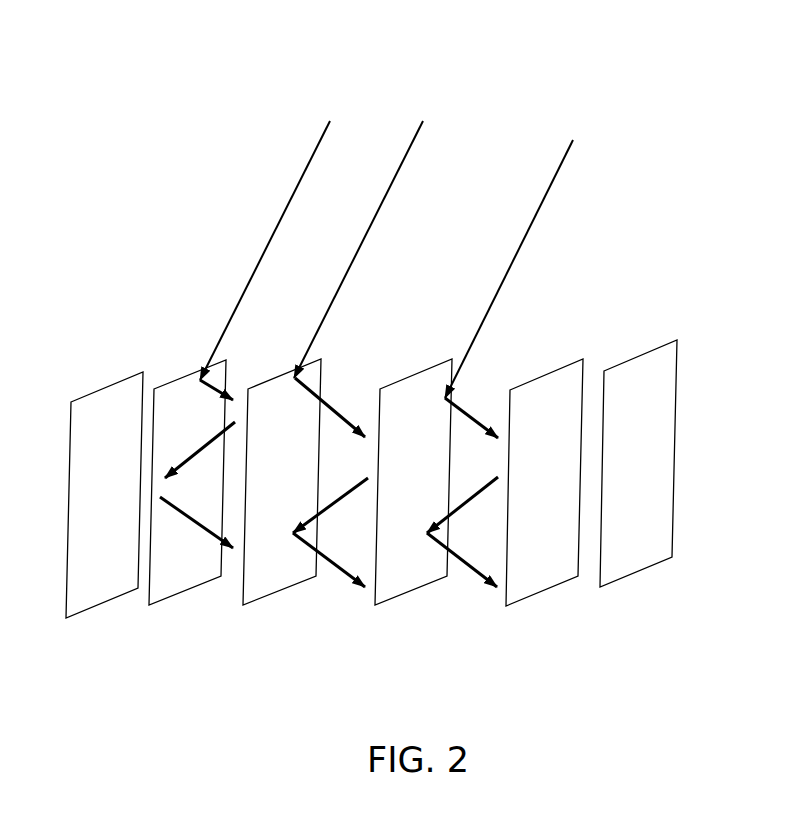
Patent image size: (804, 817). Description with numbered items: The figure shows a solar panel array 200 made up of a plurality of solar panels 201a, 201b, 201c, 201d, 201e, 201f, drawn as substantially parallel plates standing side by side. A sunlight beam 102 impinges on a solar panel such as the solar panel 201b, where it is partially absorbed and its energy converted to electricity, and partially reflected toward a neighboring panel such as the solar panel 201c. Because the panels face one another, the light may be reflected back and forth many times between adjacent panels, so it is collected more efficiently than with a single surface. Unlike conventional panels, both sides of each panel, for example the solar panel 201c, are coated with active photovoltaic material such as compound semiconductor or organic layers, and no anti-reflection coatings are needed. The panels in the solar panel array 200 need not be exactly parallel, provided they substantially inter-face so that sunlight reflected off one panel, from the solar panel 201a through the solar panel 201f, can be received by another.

The sunlight beam 102 is at (265, 248).
The solar panel array 200 is at (668, 610).
The solar panel 201a is at (100, 590).
The solar panel 201b is at (187, 580).
The solar panel 201c is at (278, 580).
The solar panel 201d is at (410, 585).
The solar panel 201e is at (550, 572).
The solar panel 201f is at (628, 572).